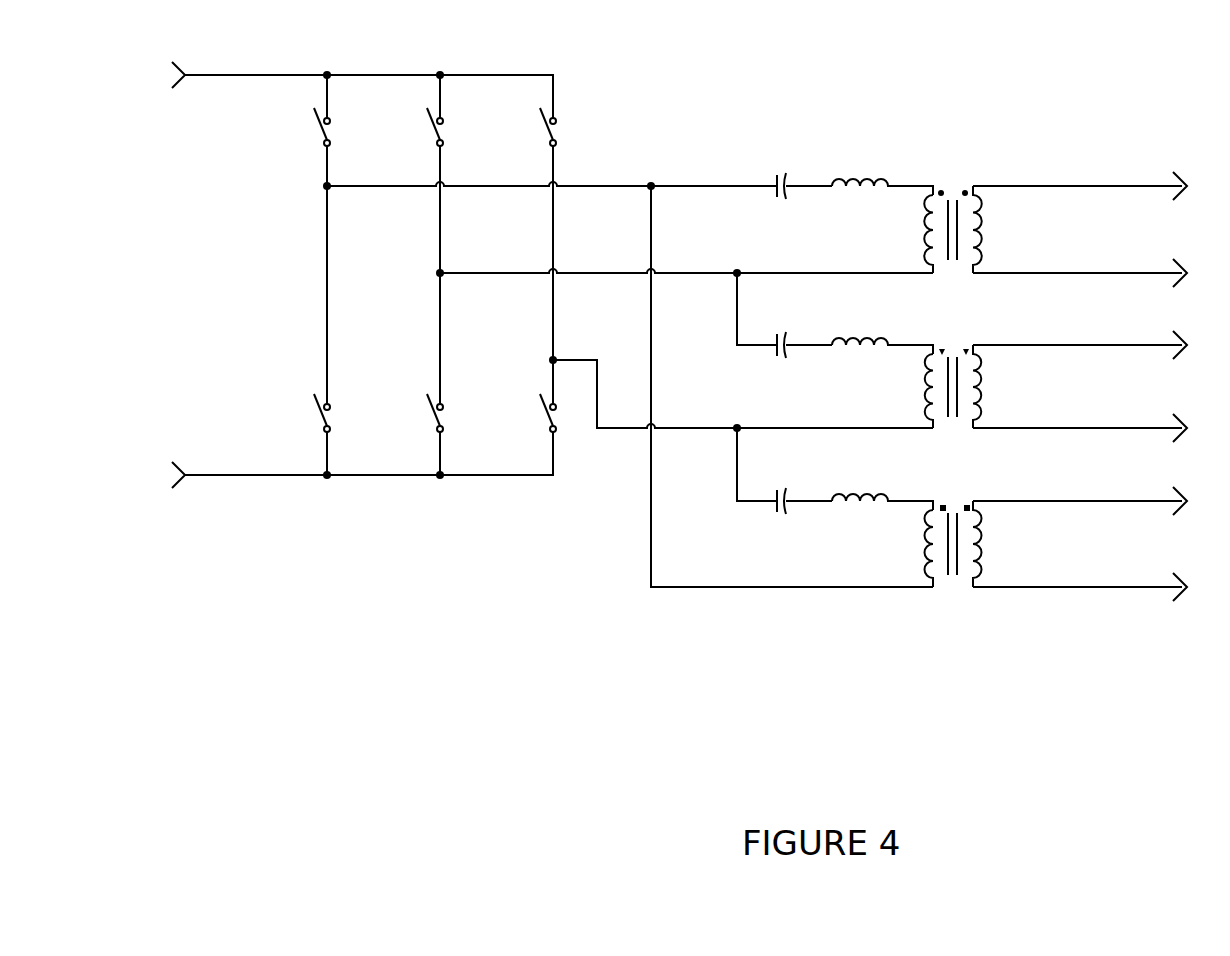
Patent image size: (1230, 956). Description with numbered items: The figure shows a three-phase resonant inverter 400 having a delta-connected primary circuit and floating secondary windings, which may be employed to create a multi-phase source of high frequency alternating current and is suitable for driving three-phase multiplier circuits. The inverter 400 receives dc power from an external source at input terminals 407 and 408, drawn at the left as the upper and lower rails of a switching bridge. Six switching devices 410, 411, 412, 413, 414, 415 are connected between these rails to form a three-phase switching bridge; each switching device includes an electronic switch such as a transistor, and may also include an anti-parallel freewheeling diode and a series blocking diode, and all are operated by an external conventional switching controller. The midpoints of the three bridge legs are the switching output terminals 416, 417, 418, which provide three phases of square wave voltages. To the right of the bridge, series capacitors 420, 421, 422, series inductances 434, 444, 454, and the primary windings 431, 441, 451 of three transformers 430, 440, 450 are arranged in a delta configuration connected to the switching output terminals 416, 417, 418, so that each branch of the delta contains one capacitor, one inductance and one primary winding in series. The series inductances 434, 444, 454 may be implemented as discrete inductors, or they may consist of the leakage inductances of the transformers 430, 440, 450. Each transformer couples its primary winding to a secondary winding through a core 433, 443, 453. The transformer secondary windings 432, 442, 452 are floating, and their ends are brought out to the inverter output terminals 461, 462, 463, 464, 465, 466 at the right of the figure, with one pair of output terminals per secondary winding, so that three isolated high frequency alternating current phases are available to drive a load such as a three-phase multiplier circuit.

The three-phase resonant inverter 400 is at (689, 363).
The input terminal 407 is at (193, 74).
The input terminal 408 is at (193, 474).
The switching device 410 is at (321, 130).
The switching device 411 is at (321, 416).
The switching device 412 is at (434, 130).
The switching device 413 is at (434, 416).
The switching device 414 is at (547, 130).
The switching device 415 is at (547, 416).
The switching output terminal 416 is at (326, 186).
The switching output terminal 417 is at (439, 273).
The switching output terminal 418 is at (552, 360).
The series capacitor 420 is at (775, 180).
The series capacitor 421 is at (775, 339).
The series capacitor 422 is at (775, 495).
The transformer 430 is at (955, 229).
The primary winding 431 is at (931, 227).
The secondary winding 432 is at (978, 227).
The transformer core 433 is at (960, 160).
The series inductance 434 is at (868, 180).
The transformer 440 is at (955, 384).
The primary winding 441 is at (931, 386).
The secondary winding 442 is at (978, 386).
The transformer core 443 is at (951, 340).
The series inductance 444 is at (868, 339).
The transformer 450 is at (955, 542).
The primary winding 451 is at (931, 543).
The secondary winding 452 is at (978, 543).
The transformer core 453 is at (951, 497).
The series inductance 454 is at (868, 495).
The inverter output terminal 461 is at (1143, 186).
The inverter output terminal 462 is at (1143, 273).
The inverter output terminal 463 is at (1143, 345).
The inverter output terminal 464 is at (1143, 428).
The inverter output terminal 465 is at (1143, 501).
The inverter output terminal 466 is at (1143, 587).